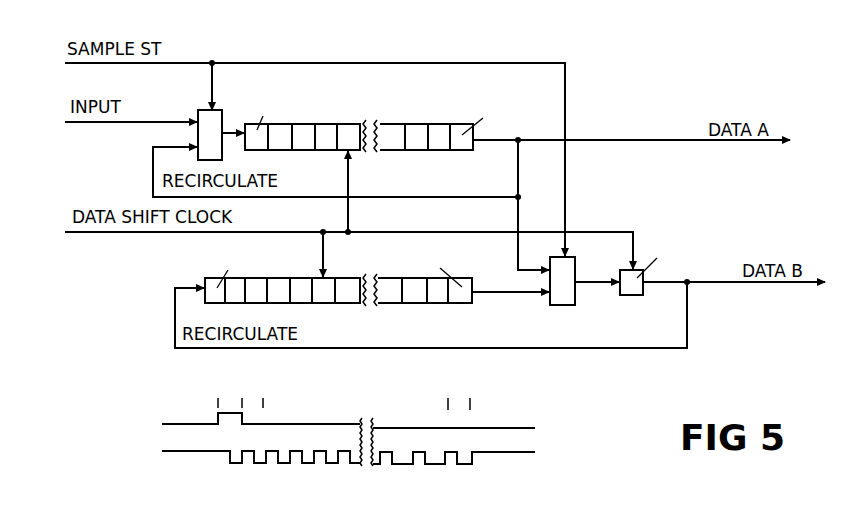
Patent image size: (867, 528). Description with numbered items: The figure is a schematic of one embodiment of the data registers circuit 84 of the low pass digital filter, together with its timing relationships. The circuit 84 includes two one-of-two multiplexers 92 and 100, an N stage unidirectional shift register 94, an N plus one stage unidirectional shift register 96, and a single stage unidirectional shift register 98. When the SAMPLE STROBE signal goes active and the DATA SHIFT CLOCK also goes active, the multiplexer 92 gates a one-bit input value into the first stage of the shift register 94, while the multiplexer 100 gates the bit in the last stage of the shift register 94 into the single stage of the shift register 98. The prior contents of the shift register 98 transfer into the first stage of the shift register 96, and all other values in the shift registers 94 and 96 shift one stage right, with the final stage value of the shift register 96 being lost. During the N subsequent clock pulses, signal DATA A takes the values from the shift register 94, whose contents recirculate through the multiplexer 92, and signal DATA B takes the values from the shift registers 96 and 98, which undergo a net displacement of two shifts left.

The 1 of 2 multiplexer 92 is at (224, 112).
The N stage unidirectional shift register 94 is at (433, 152).
The N+1 stage unidirectional shift register 96 is at (422, 305).
The single stage unidirectional shift register 98 is at (638, 298).
The 1 of 2 multiplexer 100 is at (576, 291).
The data registers circuit 84 is at (725, 394).